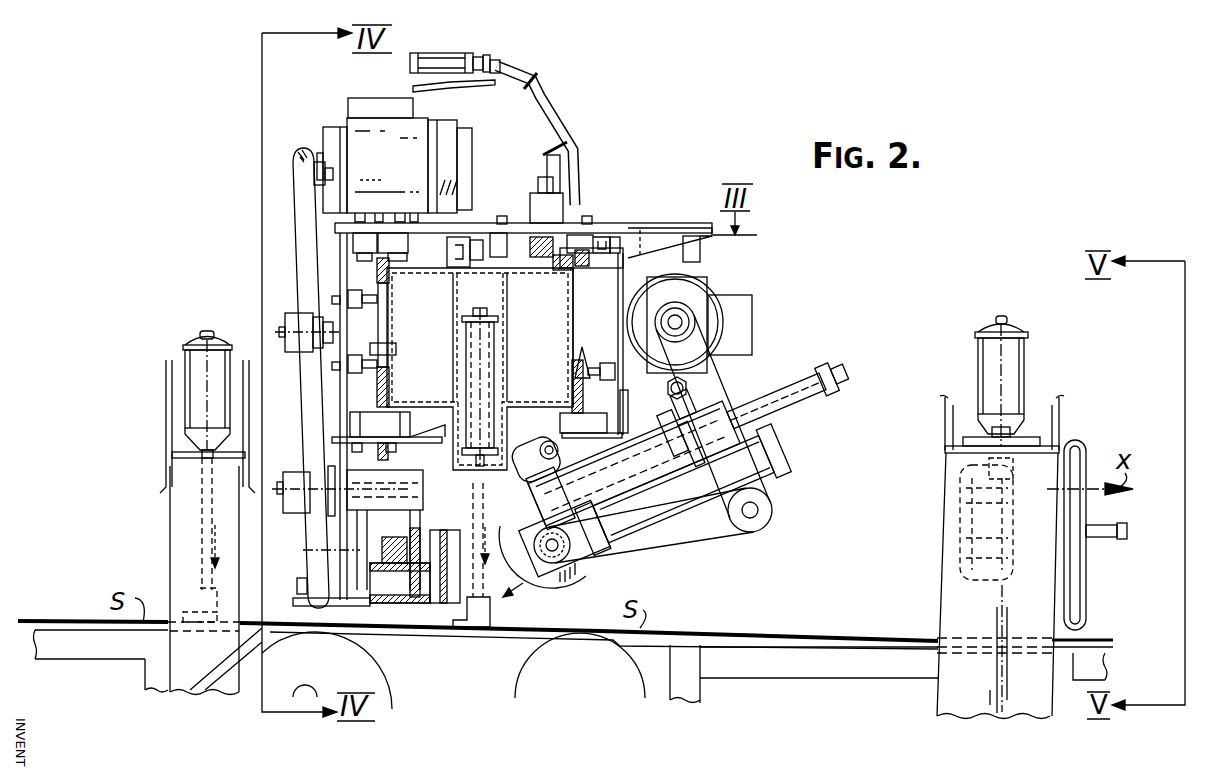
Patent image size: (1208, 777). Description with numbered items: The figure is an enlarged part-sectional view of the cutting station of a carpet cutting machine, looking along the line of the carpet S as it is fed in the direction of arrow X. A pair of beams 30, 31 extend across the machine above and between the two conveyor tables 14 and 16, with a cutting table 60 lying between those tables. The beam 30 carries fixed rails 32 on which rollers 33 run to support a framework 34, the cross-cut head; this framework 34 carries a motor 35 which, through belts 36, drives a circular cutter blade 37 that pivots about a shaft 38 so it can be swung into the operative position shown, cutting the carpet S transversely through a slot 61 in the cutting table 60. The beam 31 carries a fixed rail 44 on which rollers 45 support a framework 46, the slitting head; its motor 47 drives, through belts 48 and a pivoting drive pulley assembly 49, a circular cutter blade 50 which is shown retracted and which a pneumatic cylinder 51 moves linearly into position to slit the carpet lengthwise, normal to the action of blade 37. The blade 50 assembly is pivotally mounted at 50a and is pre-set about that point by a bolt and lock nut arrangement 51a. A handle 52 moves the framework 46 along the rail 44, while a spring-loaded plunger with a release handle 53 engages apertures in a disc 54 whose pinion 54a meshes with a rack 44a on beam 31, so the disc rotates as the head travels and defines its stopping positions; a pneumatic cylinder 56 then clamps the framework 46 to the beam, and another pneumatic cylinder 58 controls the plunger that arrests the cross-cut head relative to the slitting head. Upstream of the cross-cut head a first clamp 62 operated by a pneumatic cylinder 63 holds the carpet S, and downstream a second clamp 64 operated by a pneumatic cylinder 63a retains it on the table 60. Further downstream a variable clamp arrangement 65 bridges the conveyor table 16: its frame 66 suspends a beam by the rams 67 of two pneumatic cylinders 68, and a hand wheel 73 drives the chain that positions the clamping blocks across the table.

The conveyor table 14 is at (88, 622).
The conveyor table 16 is at (813, 640).
The beam 30 is at (430, 273).
The beam 31 is at (544, 275).
The fixed rails 32 is at (390, 392).
The rollers 33 is at (393, 350).
The framework 34 is at (445, 226).
The motor 35 is at (404, 166).
The belts 36 is at (300, 275).
The circular cutter blade 37 is at (437, 608).
The shaft 38 is at (407, 493).
The fixed rail 44 is at (573, 388).
The rack 44a is at (573, 268).
The rollers 45 is at (583, 366).
The framework 46 is at (627, 305).
The motor 47 is at (700, 302).
The belts 48 is at (728, 382).
The pivoting drive pulley assembly 49 is at (772, 510).
The circular cutter blade 50 is at (587, 578).
The pivotal mounting point 50a is at (540, 452).
The pneumatic cylinder 51 is at (785, 442).
The bolt and lock nut arrangement 51a is at (670, 392).
The handle 52 is at (442, 58).
The release handle 53 is at (450, 87).
The disc 54 is at (593, 232).
The pinion 54a is at (540, 252).
The pneumatic cylinder 56 is at (547, 160).
The pneumatic cylinder 58 is at (700, 253).
The cutting table 60 is at (487, 628).
The slot 61 is at (445, 597).
The first clamp 62 is at (195, 598).
The pneumatic cylinder 63 is at (197, 391).
The pneumatic cylinder 63a is at (482, 343).
The second clamp 64 is at (488, 617).
The variable clamp arrangement 65 is at (932, 553).
The frame 66 is at (975, 686).
The rams 67 is at (985, 457).
The pneumatic cylinders 68 is at (1018, 388).
The hand wheel 73 is at (1077, 556).